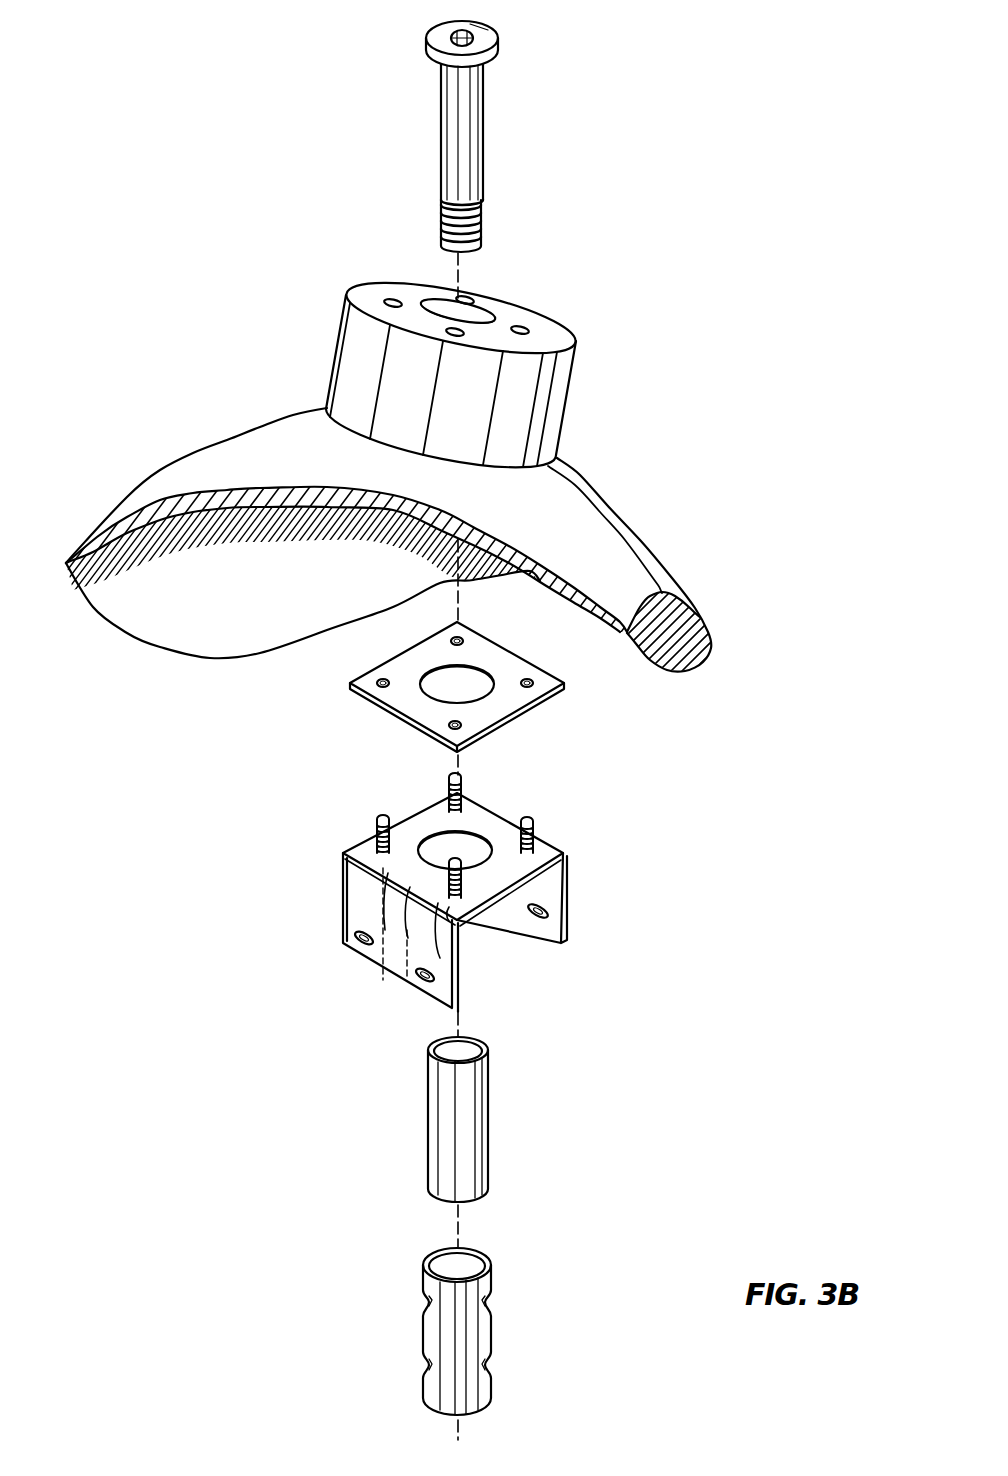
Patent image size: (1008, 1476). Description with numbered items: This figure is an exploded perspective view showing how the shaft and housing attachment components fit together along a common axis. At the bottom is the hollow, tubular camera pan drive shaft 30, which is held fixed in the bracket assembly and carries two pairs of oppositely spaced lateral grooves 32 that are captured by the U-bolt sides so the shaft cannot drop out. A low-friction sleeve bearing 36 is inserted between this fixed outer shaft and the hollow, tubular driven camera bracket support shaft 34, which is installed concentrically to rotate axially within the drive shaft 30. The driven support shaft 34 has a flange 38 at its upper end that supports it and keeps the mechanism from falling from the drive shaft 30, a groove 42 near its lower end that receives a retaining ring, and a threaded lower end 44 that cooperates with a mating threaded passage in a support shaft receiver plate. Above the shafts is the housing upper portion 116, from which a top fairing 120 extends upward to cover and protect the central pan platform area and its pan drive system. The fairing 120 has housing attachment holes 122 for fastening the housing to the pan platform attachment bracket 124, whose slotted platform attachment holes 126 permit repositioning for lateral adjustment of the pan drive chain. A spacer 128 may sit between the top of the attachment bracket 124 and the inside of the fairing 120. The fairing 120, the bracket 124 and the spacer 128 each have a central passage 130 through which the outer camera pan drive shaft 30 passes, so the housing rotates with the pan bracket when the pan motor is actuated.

The camera pan drive shaft 30 is at (492, 1335).
The lateral grooves 32 is at (425, 1365).
The driven camera bracket support shaft 34 is at (483, 128).
The sleeve bearing 36 is at (490, 1112).
The flange 38 is at (432, 44).
The groove 42 is at (481, 198).
The threaded lower end 44 is at (440, 232).
The housing upper portion 116 is at (650, 530).
The top fairing 120 is at (575, 393).
The housing attachment holes 122 is at (392, 310).
The pan platform attachment bracket 124 is at (572, 900).
The platform attachment holes 126 is at (418, 985).
The spacer 128 is at (388, 716).
The passage 130 is at (433, 303).